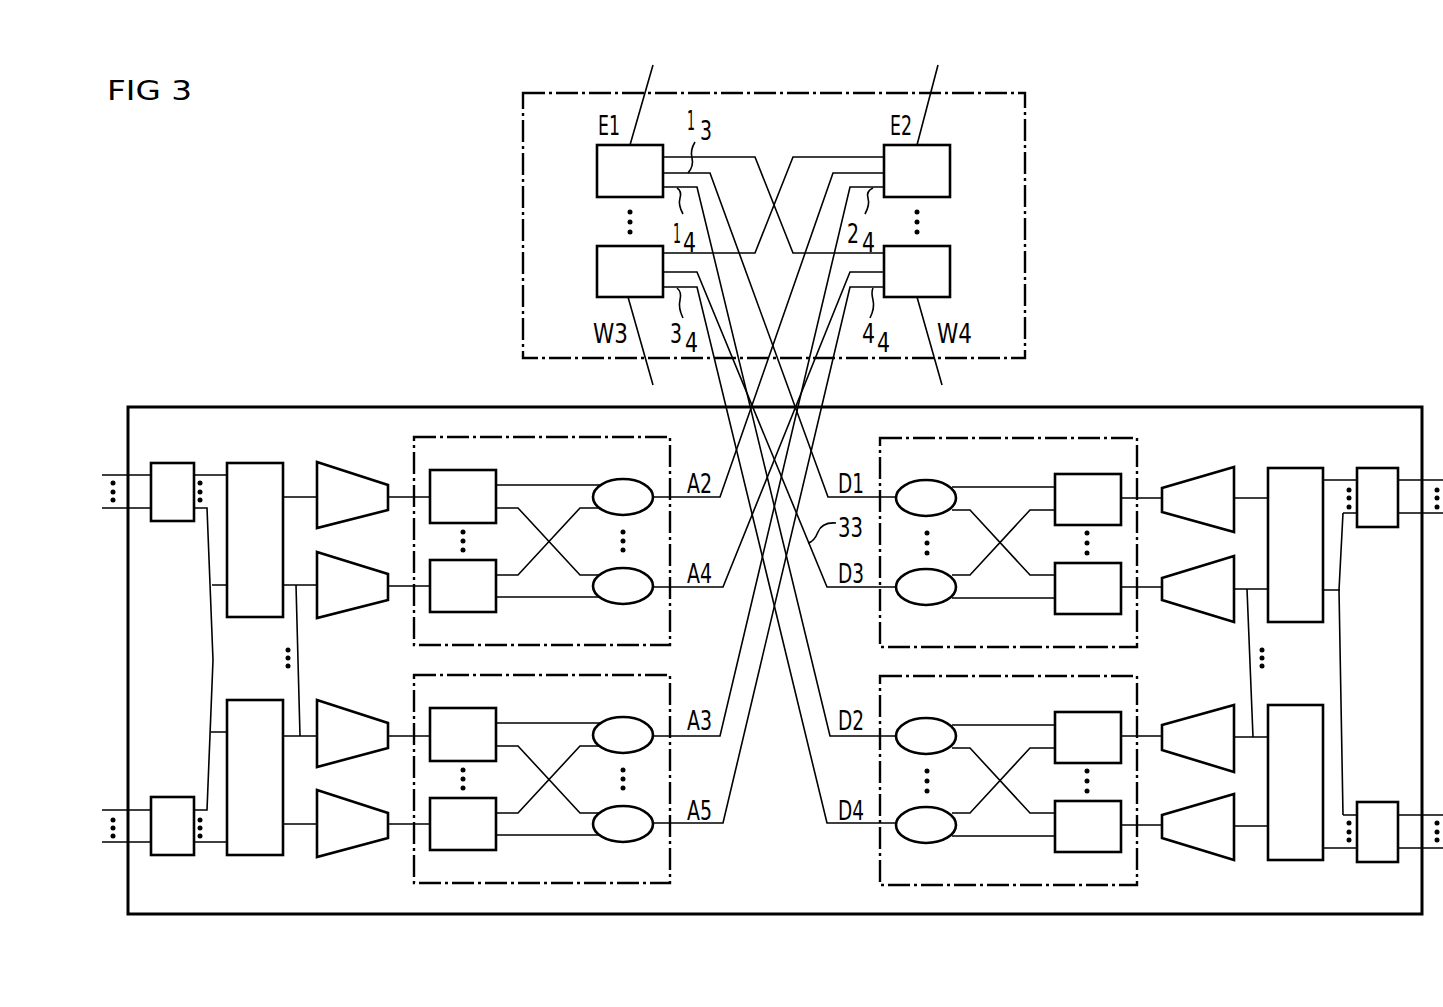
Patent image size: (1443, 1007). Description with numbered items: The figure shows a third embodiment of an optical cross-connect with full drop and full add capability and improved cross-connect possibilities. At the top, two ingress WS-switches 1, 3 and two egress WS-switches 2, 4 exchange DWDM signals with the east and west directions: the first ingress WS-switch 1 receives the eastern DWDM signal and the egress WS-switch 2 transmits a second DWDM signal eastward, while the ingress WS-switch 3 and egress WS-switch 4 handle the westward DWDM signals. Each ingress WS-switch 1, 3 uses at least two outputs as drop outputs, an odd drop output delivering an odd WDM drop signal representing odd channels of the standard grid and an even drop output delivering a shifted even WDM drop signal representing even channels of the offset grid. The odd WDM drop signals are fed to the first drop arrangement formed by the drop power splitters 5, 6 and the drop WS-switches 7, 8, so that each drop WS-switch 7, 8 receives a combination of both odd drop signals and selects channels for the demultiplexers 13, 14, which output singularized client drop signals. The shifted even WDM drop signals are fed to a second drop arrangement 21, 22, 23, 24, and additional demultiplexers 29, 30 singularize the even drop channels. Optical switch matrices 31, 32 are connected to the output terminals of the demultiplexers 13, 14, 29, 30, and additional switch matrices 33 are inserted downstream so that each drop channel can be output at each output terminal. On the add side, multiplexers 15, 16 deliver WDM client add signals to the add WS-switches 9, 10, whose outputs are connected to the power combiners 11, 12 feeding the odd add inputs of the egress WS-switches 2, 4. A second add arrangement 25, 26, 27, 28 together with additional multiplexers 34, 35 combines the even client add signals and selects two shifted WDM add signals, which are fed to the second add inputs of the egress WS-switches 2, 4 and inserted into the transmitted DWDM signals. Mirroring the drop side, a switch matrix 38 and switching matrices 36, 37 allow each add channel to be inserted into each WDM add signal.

The first ingress WS-switch 1 is at (597, 172).
The first egress WS-switch 2 is at (950, 172).
The second ingress WS-switch 3 is at (597, 270).
The second egress WS-switch 4 is at (950, 270).
The drop power splitter 5 is at (957, 498).
The drop power splitter 6 is at (957, 588).
The drop WS-switch 7 is at (1053, 478).
The drop WS-switch 8 is at (1052, 607).
The add WS-switch 9 is at (590, 497).
The add WS-switch 10 is at (590, 587).
The power combiner 11 is at (498, 478).
The power combiner 12 is at (498, 605).
The demultiplexer 13 is at (1198, 478).
The demultiplexer 14 is at (1190, 613).
The multiplexer 15 is at (353, 475).
The multiplexer 16 is at (358, 607).
The drop power splitter of second drop arrangement 21 is at (957, 737).
The drop power splitter of second drop arrangement 22 is at (957, 826).
The drop WS-switch of second drop arrangement 23 is at (1053, 716).
The drop WS-switch of second drop arrangement 24 is at (1052, 845).
The power combiner of second add arrangement 25 is at (498, 716).
The power combiner of second add arrangement 26 is at (498, 843).
The add WS-switch of second add arrangement 27 is at (590, 735).
The add WS-switch of second add arrangement 28 is at (590, 825).
The additional demultiplexer 29 is at (1190, 715).
The additional demultiplexer 30 is at (1192, 850).
The optical switch matrix 31 is at (1268, 547).
The optical switch matrix 32 is at (1268, 784).
The M(N×K) switch matrix 33 is at (1372, 528).
The additional multiplexer 34 is at (362, 717).
The additional multiplexer 35 is at (358, 847).
The switching matrix 36 is at (283, 542).
The switching matrix 37 is at (283, 780).
The M(N×N) switch matrix 38 is at (172, 522).